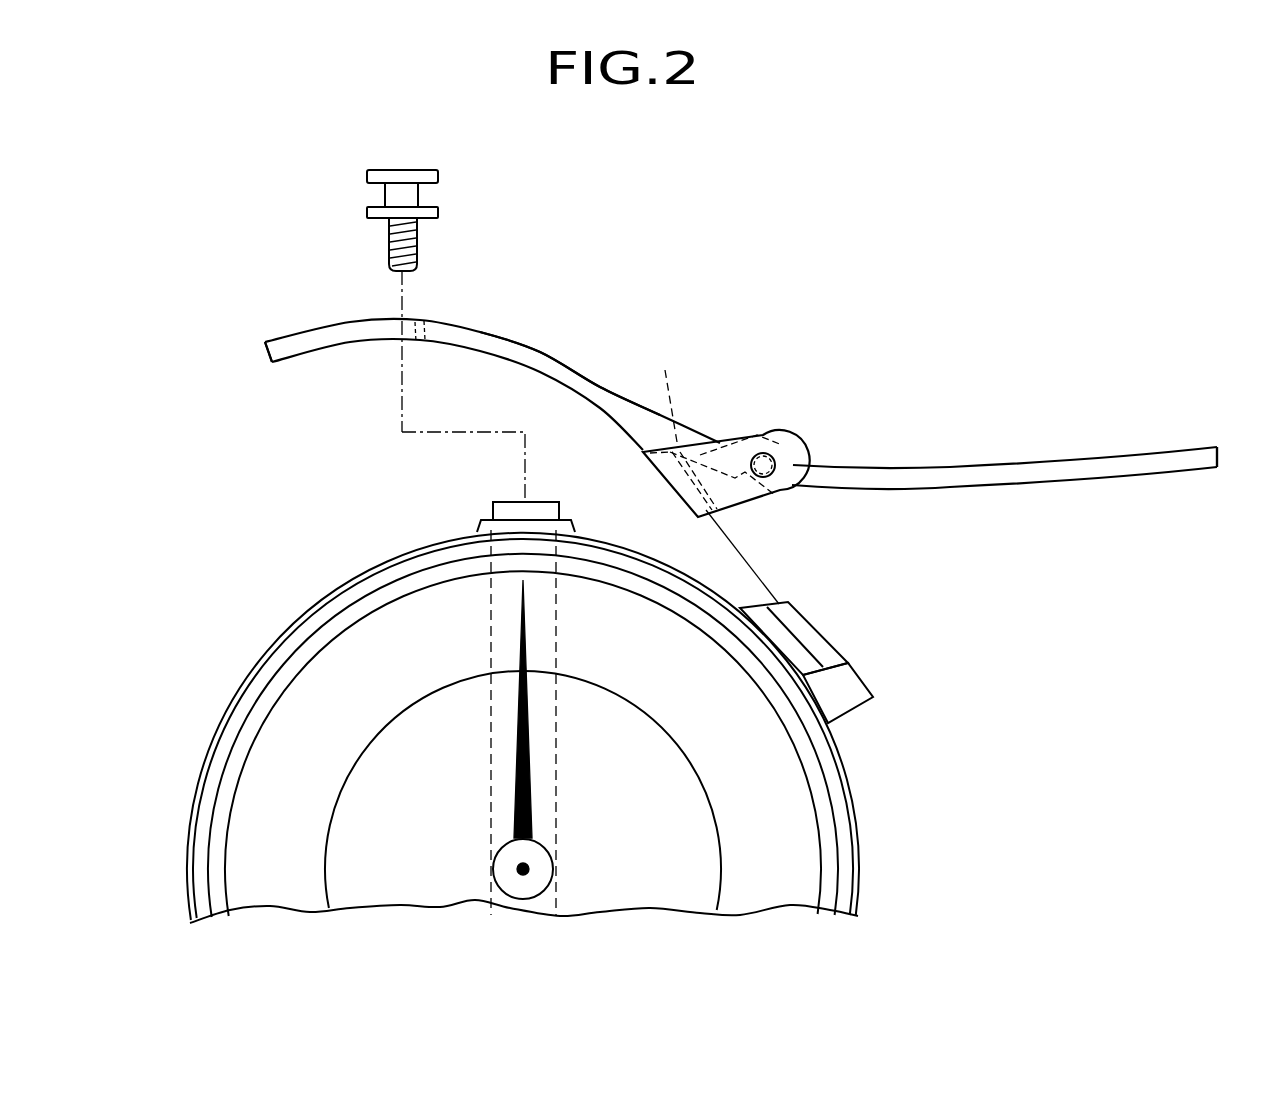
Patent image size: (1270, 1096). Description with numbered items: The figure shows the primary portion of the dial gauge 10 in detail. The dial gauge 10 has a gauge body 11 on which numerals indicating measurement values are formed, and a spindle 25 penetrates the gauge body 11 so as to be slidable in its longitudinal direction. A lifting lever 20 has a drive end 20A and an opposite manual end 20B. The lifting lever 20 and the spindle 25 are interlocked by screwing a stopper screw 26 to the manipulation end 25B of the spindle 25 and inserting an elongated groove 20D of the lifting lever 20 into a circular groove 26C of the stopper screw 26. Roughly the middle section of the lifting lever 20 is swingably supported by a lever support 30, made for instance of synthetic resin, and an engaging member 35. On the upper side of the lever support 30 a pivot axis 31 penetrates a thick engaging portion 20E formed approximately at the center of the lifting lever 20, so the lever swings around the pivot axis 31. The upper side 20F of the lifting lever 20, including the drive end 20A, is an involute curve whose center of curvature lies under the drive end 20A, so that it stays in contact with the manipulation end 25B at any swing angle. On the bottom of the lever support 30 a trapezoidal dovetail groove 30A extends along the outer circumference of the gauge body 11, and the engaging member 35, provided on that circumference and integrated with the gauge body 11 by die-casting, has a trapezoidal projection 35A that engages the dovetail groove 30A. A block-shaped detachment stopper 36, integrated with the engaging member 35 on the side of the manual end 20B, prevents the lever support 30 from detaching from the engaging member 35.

The dial gauge 10 is at (210, 716).
The gauge body 11 is at (243, 857).
The lifting lever 20 is at (963, 466).
The drive end 20A is at (275, 345).
The manual end 20B is at (1148, 456).
The elongated groove 20D is at (418, 322).
The thick engaging portion 20E is at (757, 502).
The upper side 20F is at (512, 335).
The spindle 25 is at (490, 625).
The manipulation end 25B is at (493, 511).
The stopper screw 26 is at (403, 181).
The circular groove 26C is at (422, 188).
The lever support 30 is at (766, 440).
The dovetail groove 30A is at (678, 425).
The pivot axis 31 is at (780, 453).
The engaging member 35 is at (800, 610).
The projection 35A is at (812, 650).
The detachment stopper 36 is at (855, 695).